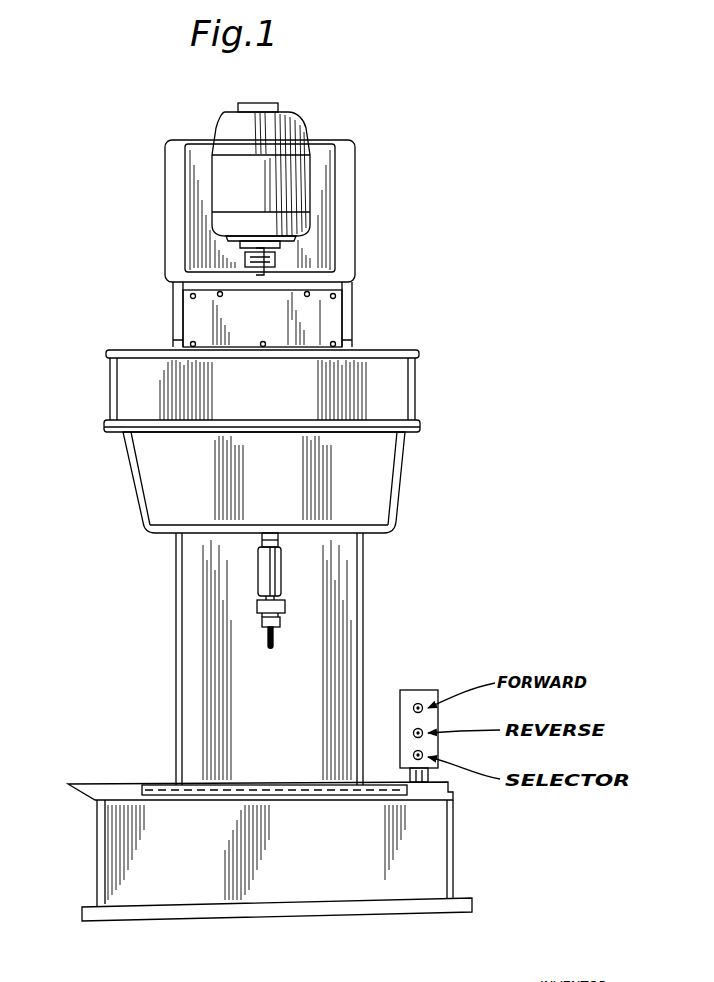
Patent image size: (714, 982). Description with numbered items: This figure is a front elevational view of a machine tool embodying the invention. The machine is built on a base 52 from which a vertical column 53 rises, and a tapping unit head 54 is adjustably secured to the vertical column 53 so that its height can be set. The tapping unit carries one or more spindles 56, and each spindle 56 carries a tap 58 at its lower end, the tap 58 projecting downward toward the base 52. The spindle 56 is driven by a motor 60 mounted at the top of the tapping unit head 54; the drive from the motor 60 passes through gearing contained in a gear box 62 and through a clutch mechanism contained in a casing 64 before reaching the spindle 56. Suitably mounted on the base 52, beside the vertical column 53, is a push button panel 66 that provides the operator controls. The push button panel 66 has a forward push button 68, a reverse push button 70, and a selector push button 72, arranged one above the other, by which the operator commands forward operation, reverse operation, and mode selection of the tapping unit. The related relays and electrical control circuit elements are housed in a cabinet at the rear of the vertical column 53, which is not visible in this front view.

The base 52 is at (128, 855).
The vertical column 53 is at (190, 748).
The tapping unit head 54 is at (163, 308).
The spindle 56 is at (278, 560).
The tap 58 is at (276, 637).
The motor 60 is at (283, 131).
The gear box 62 is at (130, 388).
The casing 64 is at (328, 320).
The push button panel 66 is at (408, 698).
The forward push button 68 is at (408, 708).
The reverse push button 70 is at (410, 733).
The selector push button 72 is at (410, 756).